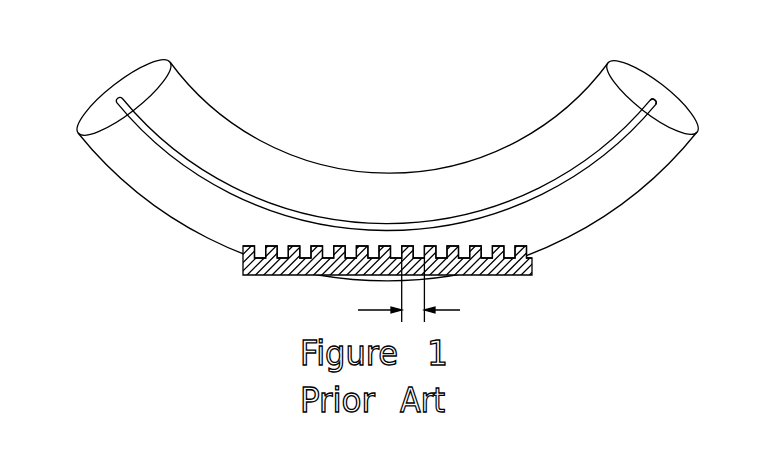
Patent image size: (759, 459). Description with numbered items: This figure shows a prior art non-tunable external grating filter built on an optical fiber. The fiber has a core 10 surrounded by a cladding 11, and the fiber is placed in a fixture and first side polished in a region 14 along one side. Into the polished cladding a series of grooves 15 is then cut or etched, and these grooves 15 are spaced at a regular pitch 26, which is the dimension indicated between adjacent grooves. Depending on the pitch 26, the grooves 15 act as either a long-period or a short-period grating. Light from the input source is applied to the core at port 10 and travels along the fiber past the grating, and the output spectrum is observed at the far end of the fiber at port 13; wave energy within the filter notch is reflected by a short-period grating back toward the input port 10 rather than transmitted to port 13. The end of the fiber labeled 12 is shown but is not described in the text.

The core 10 is at (127, 93).
The cladding 11 is at (78, 133).
The tube end 12 is at (625, 65).
The port 13 is at (652, 98).
The region 14 is at (532, 275).
The grooves 15 is at (277, 253).
The pitch 26 is at (434, 295).